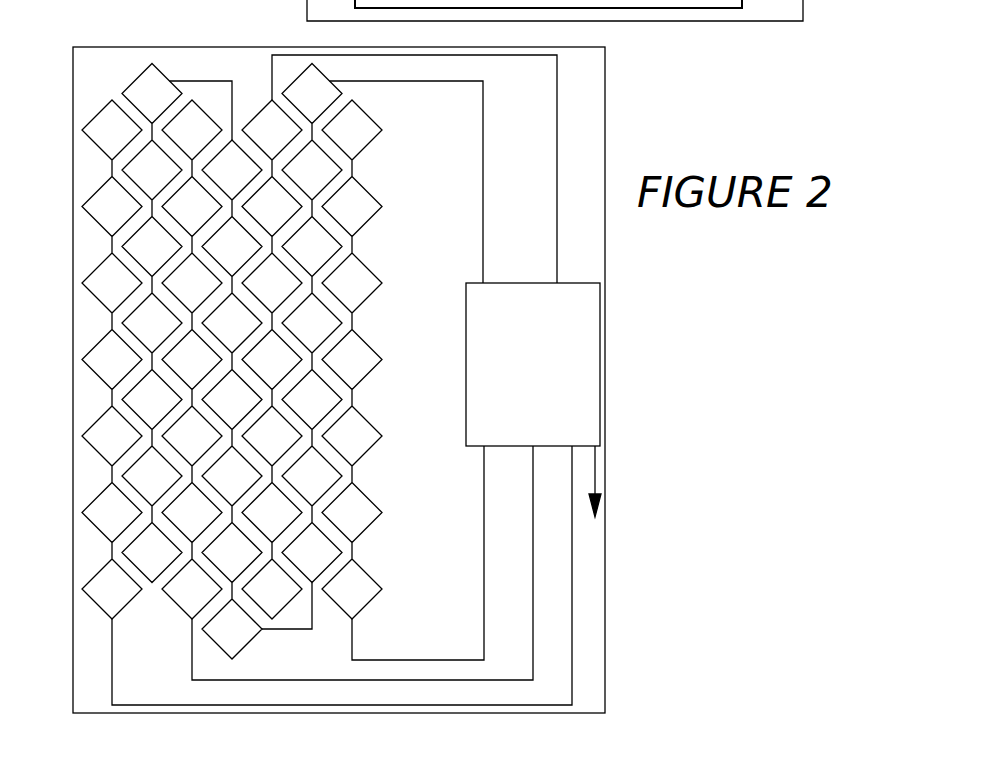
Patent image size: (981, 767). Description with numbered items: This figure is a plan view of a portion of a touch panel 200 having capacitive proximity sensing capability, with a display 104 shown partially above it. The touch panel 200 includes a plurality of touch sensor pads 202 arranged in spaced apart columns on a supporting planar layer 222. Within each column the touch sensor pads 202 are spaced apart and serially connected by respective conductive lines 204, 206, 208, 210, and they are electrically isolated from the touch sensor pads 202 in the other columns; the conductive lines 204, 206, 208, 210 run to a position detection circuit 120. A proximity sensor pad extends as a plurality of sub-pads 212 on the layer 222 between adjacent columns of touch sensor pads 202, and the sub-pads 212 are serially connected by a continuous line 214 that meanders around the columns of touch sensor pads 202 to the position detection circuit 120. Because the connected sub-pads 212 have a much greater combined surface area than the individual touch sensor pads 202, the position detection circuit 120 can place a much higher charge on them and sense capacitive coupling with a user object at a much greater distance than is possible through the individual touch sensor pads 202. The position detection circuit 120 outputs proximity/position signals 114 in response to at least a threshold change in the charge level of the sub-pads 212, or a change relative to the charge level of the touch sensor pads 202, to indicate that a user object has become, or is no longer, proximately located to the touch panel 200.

The display 104 is at (598, 8).
The proximity/position signal 114 is at (595, 468).
The position detection circuit 120 is at (533, 364).
The touch panel 200 is at (150, 34).
The touch sensor pads 202 is at (232, 359).
The conductive line 204 is at (423, 705).
The conductive line 206 is at (258, 680).
The conductive line 208 is at (558, 150).
The conductive line 210 is at (370, 660).
The proximity sensor sub-pads 212 is at (232, 362).
The continuous line 214 is at (483, 147).
The supporting planar layer 222 is at (86, 175).